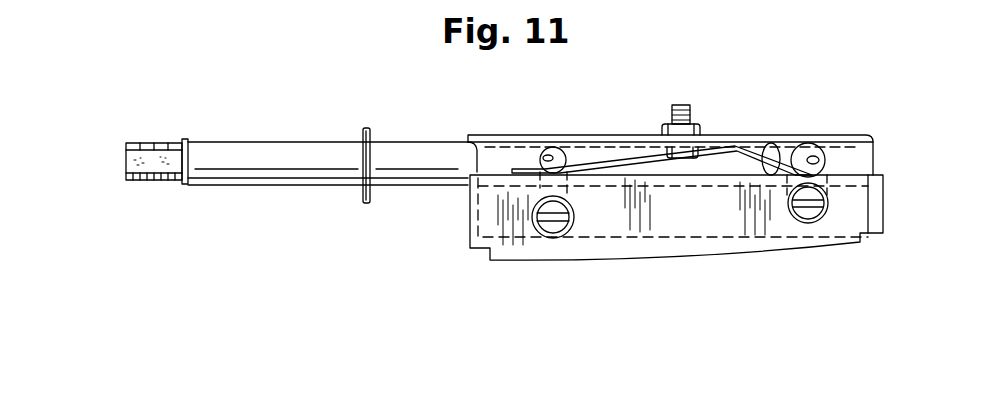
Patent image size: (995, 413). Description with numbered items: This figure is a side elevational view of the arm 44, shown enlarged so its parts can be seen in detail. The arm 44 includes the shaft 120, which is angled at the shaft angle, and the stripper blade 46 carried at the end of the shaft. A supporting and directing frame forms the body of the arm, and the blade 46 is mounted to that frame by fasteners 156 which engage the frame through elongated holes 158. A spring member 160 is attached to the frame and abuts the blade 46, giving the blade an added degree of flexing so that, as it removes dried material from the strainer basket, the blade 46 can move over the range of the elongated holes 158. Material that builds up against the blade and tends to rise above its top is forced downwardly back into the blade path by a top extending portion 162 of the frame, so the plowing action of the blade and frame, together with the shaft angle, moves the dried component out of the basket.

The arm 44 is at (271, 129).
The shaft 120 is at (402, 158).
The top extending portion 162 is at (896, 108).
The spring member 160 is at (750, 150).
The elongated holes 158 is at (548, 155).
The stripper blade 46 is at (712, 250).
The fasteners 156 is at (556, 226).